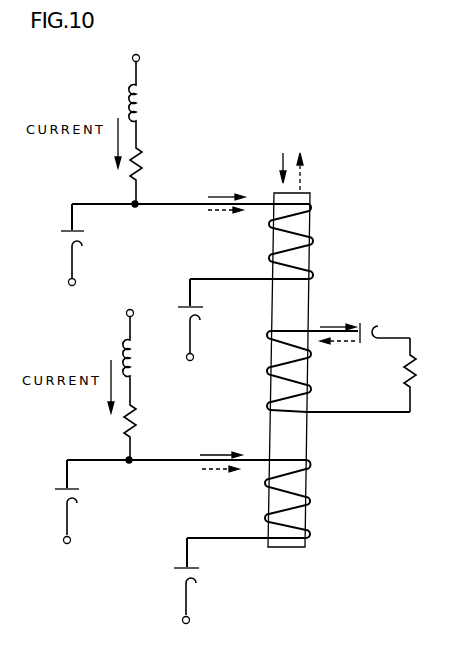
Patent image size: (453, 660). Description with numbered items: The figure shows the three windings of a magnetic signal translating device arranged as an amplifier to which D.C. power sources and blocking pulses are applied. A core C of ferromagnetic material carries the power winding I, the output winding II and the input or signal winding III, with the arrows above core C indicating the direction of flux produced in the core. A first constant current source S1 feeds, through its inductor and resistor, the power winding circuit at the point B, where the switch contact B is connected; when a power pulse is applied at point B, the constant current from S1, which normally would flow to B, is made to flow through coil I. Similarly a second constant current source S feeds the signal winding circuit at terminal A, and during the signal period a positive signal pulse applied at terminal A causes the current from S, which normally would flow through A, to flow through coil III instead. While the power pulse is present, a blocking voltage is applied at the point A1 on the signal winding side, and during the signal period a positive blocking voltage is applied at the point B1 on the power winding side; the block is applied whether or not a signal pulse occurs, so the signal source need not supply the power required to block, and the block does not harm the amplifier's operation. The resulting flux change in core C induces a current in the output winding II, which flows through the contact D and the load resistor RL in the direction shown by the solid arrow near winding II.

The constant current source S1 is at (136, 118).
The constant current source S is at (130, 375).
The power pulse terminal B is at (72, 268).
The blocking voltage terminal B1 is at (190, 331).
The signal terminal A is at (67, 527).
The blocking voltage terminal A1 is at (186, 592).
The power winding I is at (201, 241).
The output winding II is at (324, 371).
The input winding III is at (200, 499).
The core C is at (290, 549).
The output contact D is at (365, 344).
The load resistor RL is at (420, 375).